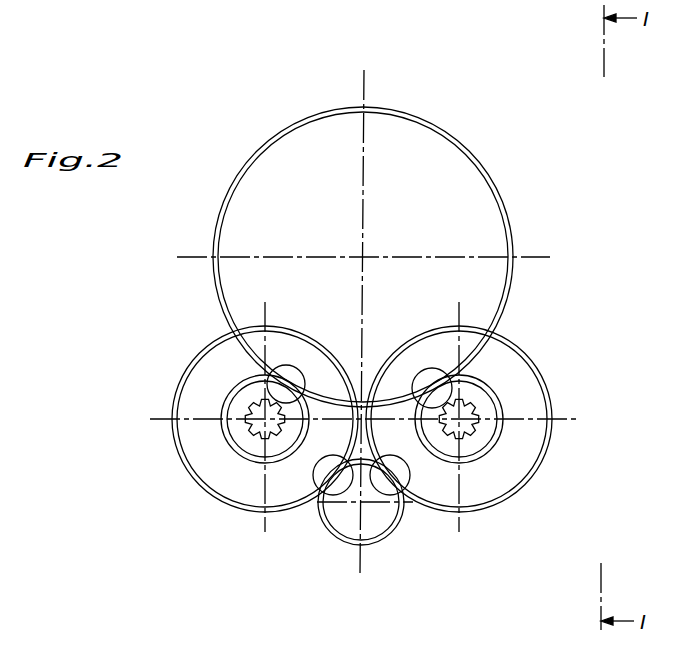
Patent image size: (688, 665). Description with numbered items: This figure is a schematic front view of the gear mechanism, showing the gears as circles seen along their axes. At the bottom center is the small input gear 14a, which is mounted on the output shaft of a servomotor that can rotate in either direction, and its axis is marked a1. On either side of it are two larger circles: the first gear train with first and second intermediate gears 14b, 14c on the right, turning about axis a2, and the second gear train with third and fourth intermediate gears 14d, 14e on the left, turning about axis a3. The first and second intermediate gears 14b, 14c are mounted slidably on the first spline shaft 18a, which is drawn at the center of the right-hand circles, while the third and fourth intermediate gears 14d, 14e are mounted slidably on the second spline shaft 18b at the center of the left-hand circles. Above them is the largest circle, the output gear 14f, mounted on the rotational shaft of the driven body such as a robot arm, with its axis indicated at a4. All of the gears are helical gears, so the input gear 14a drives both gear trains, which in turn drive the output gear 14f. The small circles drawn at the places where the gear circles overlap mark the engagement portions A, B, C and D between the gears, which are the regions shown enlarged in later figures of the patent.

The output gear 14f is at (458, 141).
The axis of outer ring roll a4 is at (364, 256).
The third intermediate gear 14d is at (207, 345).
The fourth intermediate gear 14e is at (226, 397).
The second spline shaft 18b is at (243, 427).
The axis of left roll a3 is at (257, 430).
The first intermediate gear 14b is at (442, 511).
The second intermediate gear 14c is at (486, 456).
The first spline shaft 18a is at (470, 432).
The axis of right roll a2 is at (473, 407).
The input gear 14a is at (330, 530).
The axis of lower small roll a1 is at (361, 503).
The gear engagement portion A is at (419, 494).
The gear engagement portion B is at (437, 372).
The gear engagement portion C is at (302, 370).
The gear engagement portion D is at (313, 483).